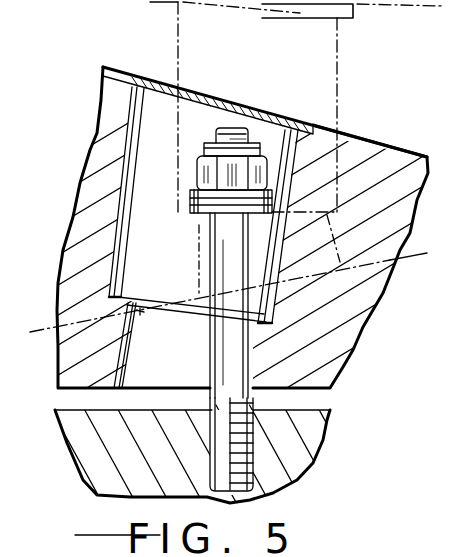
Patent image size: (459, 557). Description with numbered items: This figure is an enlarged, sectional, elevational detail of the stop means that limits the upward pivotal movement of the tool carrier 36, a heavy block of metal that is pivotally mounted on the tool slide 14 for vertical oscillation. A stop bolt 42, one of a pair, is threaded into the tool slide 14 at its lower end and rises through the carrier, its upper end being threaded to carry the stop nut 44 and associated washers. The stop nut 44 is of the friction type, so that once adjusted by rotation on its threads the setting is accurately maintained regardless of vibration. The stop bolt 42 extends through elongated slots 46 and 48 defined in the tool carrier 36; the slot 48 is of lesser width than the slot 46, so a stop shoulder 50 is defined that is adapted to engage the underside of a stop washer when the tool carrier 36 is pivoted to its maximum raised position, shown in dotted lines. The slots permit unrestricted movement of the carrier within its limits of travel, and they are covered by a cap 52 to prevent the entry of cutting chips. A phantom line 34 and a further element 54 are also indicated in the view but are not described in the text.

The slide 14 is at (310, 443).
The pivot axis line 34 is at (244, 292).
The tool carrier 36 is at (362, 165).
The stop bolt 42 is at (225, 333).
The stop nut 44 is at (198, 174).
The slot 46 is at (137, 207).
The slot 48 is at (120, 381).
The stop shoulder 50 is at (123, 297).
The cap 52 is at (247, 107).
The adjacent member 54 is at (370, 556).